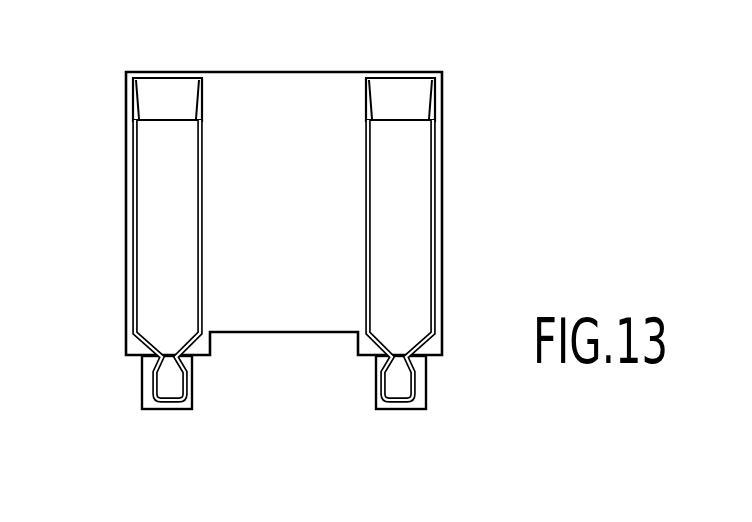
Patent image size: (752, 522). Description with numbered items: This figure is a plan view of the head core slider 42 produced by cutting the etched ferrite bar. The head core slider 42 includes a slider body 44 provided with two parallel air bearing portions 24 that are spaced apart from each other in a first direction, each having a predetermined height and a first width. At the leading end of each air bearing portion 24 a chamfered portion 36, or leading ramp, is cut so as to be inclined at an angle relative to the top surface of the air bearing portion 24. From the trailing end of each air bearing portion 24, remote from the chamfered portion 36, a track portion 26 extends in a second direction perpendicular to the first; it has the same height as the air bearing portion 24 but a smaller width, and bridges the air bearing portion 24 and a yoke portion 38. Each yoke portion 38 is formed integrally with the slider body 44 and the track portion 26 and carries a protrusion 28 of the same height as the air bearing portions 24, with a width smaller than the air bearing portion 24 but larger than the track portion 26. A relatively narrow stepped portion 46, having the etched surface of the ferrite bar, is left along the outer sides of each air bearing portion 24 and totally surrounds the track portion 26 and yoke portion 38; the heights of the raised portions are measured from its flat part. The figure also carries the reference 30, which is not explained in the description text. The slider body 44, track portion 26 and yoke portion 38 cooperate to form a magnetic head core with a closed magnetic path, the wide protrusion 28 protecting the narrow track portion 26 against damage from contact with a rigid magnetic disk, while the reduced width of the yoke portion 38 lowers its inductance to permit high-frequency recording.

The air bearing portion 24 is at (286, 242).
The track portion 26 is at (311, 299).
The protrusion 28 is at (163, 405).
The channel 30 is at (314, 299).
The chamfered portion 36 is at (175, 87).
The yoke portion 38 is at (127, 406).
The head core slider 42 is at (325, 213).
The slider body 44 is at (114, 242).
The stepped portion 46 is at (286, 276).